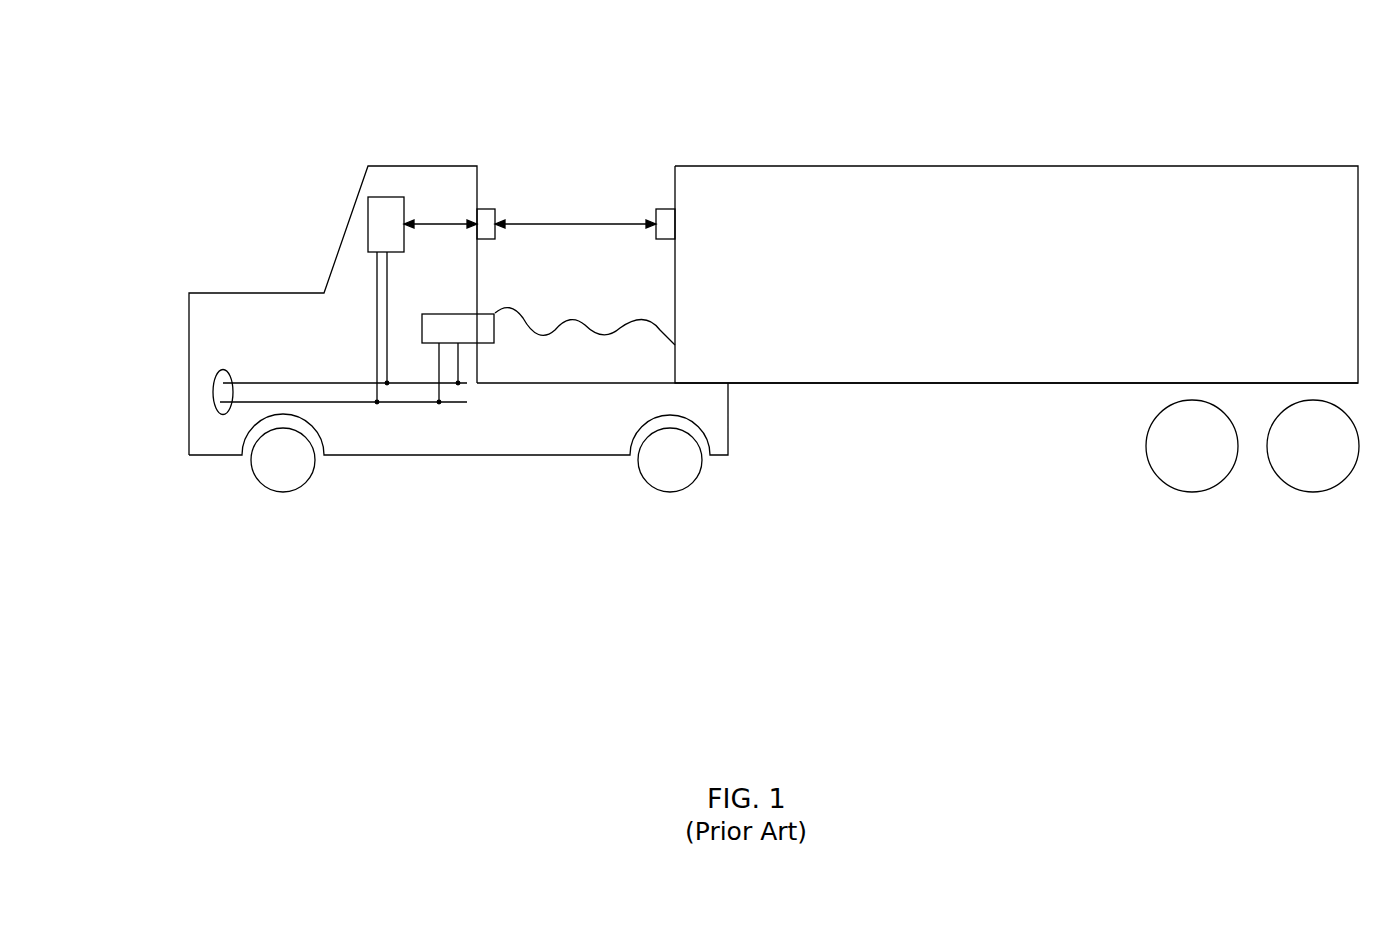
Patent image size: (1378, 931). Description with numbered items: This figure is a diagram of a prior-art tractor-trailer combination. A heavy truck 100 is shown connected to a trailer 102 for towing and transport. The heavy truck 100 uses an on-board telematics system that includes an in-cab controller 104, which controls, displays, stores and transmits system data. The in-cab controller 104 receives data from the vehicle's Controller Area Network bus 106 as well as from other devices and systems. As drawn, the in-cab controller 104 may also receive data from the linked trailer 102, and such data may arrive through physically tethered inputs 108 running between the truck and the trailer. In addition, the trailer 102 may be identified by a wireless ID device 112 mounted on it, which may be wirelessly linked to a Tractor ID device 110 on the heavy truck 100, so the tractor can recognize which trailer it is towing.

The heavy truck 100 is at (409, 183).
The trailer 102 is at (915, 203).
The in-cab controller 104 is at (386, 215).
The Controller Area Network bus 106 is at (218, 406).
The physically tethered inputs 108 is at (489, 343).
The Tractor ID device 110 is at (487, 208).
The wireless ID device 112 is at (665, 222).